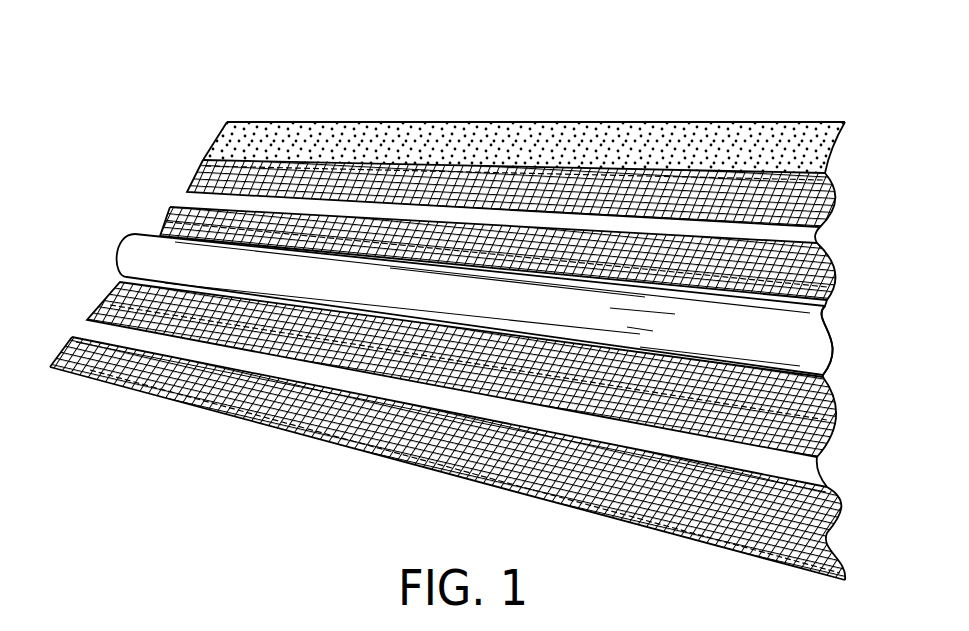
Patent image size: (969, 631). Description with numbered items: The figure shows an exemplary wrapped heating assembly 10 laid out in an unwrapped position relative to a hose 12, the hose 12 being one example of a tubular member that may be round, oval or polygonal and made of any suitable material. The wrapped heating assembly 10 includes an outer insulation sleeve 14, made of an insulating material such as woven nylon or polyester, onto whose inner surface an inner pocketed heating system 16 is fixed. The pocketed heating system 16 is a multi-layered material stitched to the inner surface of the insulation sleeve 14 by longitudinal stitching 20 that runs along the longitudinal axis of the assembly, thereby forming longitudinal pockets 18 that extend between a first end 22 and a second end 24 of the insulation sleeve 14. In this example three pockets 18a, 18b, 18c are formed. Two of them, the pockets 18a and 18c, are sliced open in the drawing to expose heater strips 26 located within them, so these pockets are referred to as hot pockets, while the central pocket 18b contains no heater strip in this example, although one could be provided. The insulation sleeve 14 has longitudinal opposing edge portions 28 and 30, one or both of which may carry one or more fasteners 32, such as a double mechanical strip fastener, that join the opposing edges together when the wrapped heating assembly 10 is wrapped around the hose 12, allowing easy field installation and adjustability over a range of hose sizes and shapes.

The wrapped heating assembly 10 is at (661, 96).
The hose 12 is at (135, 245).
The outer insulation sleeve 14 is at (298, 121).
The inner pocketed heating system 16 is at (865, 204).
The longitudinal pockets 18 is at (484, 315).
The first pocket 18a is at (198, 178).
The central pocket 18b is at (162, 227).
The third pocket 18c is at (110, 308).
The longitudinal stitching 20 is at (238, 158).
The first end 22 is at (823, 327).
The second end 24 is at (68, 337).
The heater strips 26 is at (327, 202).
The longitudinal opposing edge portion 28 is at (567, 122).
The longitudinal opposing edge portion 30 is at (307, 440).
The fasteners 32 is at (505, 492).